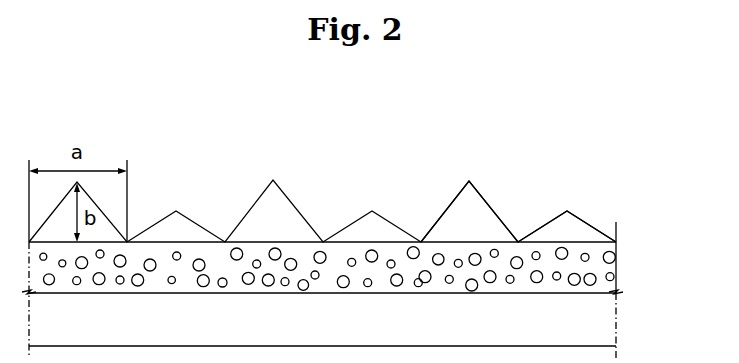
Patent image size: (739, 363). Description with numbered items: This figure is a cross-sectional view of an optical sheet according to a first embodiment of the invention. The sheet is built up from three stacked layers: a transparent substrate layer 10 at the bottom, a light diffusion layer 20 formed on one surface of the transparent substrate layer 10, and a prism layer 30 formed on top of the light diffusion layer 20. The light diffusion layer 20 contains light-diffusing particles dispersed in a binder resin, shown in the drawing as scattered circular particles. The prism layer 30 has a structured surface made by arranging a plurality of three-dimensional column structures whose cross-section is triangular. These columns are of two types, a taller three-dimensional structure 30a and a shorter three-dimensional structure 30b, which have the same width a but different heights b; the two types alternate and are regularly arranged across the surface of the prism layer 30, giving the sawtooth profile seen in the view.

The transparent substrate layer 10 is at (616, 325).
The light diffusion layer 20 is at (616, 267).
The prism layer 30 is at (362, 185).
The first 3D structure 30a is at (482, 205).
The second 3D structure 30b is at (580, 227).